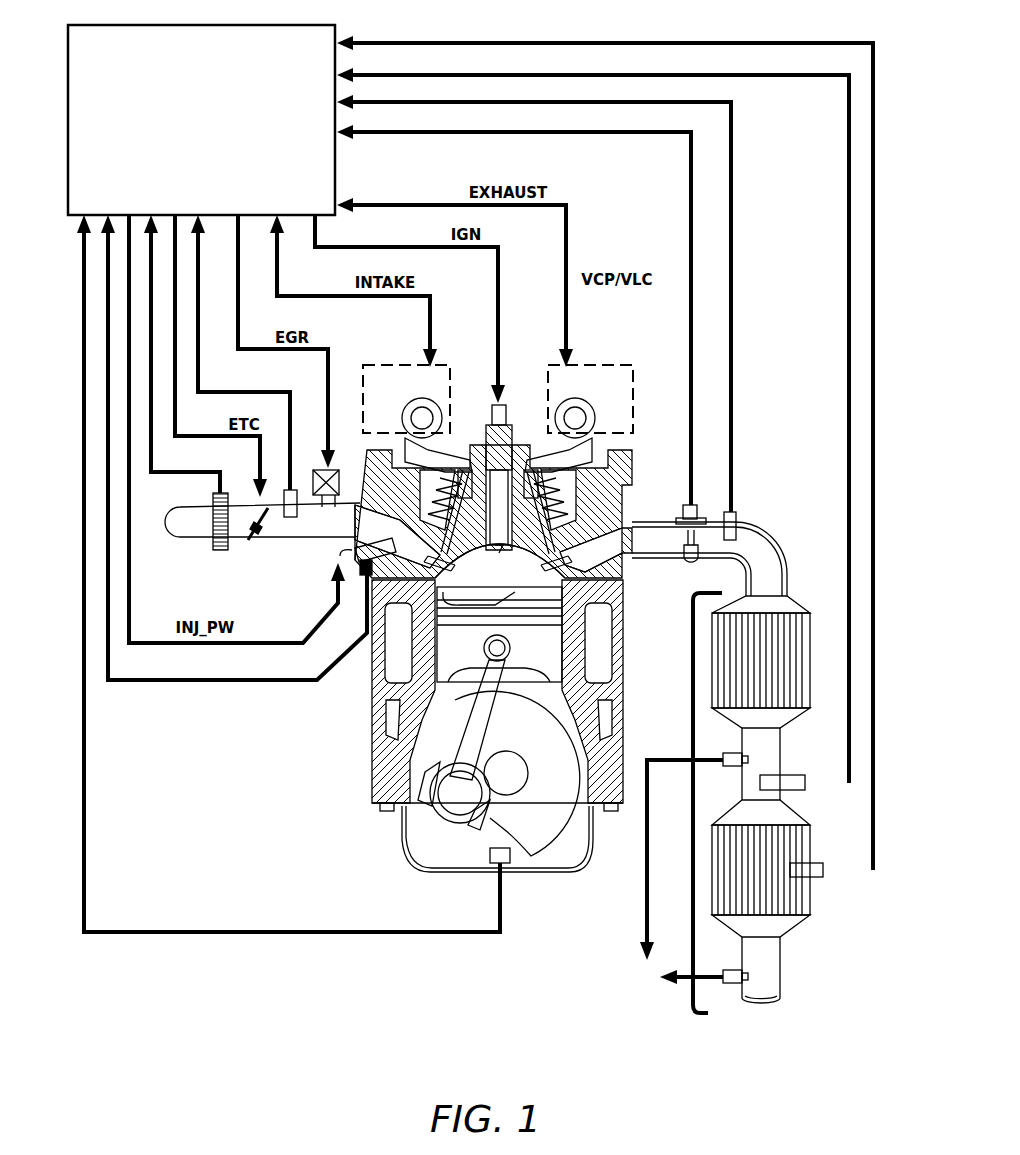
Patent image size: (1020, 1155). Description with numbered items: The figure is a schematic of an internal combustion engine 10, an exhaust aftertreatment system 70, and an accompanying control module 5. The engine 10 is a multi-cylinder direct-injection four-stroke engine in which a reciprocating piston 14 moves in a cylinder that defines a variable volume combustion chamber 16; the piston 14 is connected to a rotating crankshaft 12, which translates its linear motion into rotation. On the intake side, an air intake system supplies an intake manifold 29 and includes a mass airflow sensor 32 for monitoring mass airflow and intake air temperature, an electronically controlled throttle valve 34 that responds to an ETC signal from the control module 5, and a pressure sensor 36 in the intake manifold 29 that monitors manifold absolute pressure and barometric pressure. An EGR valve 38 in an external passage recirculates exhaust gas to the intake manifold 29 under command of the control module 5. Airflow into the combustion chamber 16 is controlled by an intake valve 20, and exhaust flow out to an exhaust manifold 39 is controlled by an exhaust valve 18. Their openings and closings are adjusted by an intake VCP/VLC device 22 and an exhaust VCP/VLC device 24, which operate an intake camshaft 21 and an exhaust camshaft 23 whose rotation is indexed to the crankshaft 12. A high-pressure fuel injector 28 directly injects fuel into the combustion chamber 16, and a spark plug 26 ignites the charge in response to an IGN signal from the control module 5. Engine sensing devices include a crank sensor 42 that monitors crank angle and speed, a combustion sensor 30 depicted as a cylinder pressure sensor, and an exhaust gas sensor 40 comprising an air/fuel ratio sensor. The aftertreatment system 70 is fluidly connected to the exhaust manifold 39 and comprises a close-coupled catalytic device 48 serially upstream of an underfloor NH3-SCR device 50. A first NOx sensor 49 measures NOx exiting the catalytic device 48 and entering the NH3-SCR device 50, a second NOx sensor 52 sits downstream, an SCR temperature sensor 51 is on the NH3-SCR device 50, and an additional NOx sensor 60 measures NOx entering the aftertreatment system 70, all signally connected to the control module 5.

The control module 5 is at (268, 0).
The internal combustion engine 10 is at (608, 692).
The crankshaft 12 is at (550, 818).
The piston 14 is at (499, 634).
The combustion chamber 16 is at (500, 565).
The exhaust valve 18 is at (568, 546).
The intake valve 20 is at (420, 531).
The intake camshaft 21 is at (426, 416).
The intake variable cam phasing/variable lift control device 22 is at (436, 358).
The exhaust camshaft 23 is at (582, 426).
The exhaust variable cam phasing/variable lift control device 24 is at (626, 430).
The spark plug 26 is at (508, 408).
The fuel injector 28 is at (338, 575).
The intake manifold 29 is at (352, 496).
The combustion sensor 30 is at (353, 598).
The mass airflow sensor 32 is at (218, 552).
The throttle valve 34 is at (252, 538).
The pressure sensor 36 is at (290, 520).
The exhaust gas recirculation (EGR) valve 38 is at (326, 512).
The exhaust manifold 39 is at (628, 528).
The exhaust gas sensor 40 is at (700, 510).
The crank sensor 42 is at (494, 862).
The catalytic device 48 is at (808, 632).
The first NOx sensor 49 is at (730, 768).
The ammonia-selective catalytic reduction (NH3-SCR) device 50 is at (818, 855).
The SCR temperature sensor 51 is at (815, 878).
The second NOx sensor 52 is at (733, 985).
The additional NOx sensor 60 is at (738, 520).
The exhaust aftertreatment system 70 is at (691, 698).